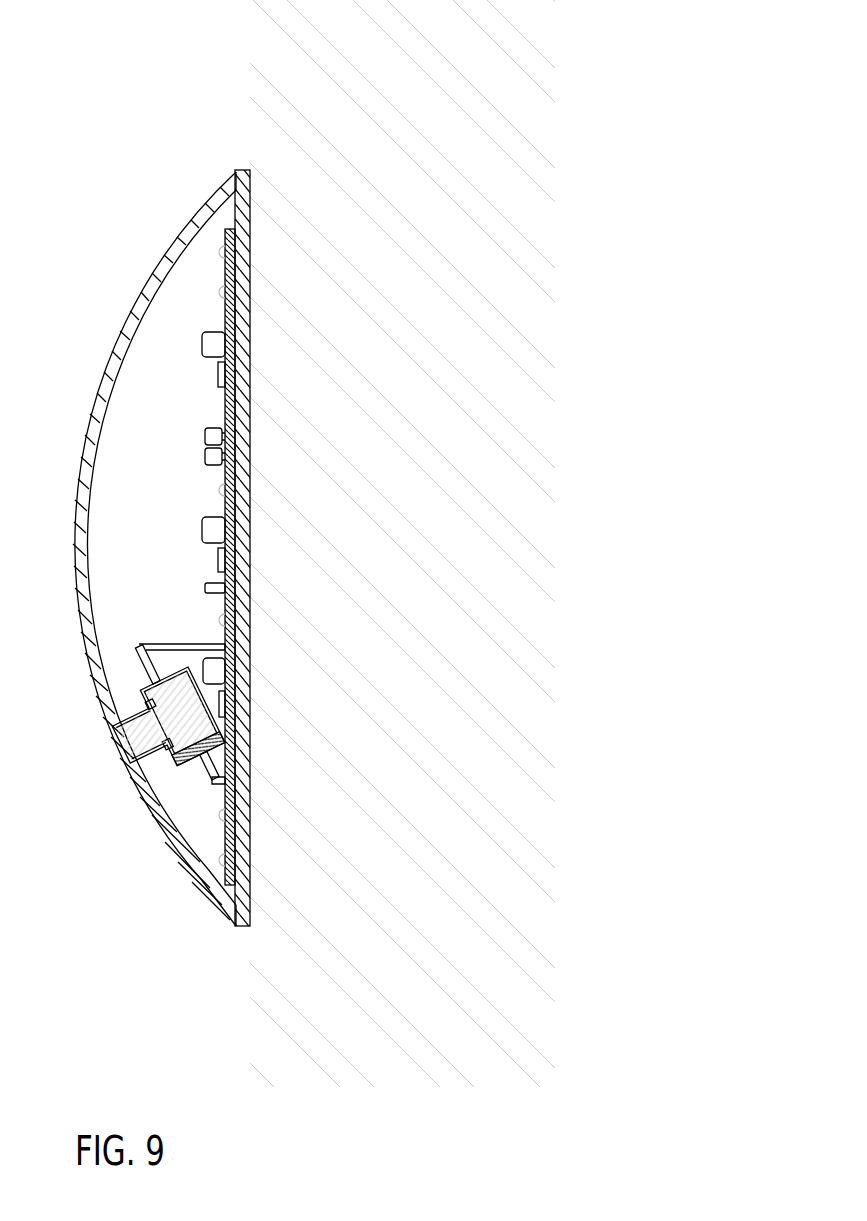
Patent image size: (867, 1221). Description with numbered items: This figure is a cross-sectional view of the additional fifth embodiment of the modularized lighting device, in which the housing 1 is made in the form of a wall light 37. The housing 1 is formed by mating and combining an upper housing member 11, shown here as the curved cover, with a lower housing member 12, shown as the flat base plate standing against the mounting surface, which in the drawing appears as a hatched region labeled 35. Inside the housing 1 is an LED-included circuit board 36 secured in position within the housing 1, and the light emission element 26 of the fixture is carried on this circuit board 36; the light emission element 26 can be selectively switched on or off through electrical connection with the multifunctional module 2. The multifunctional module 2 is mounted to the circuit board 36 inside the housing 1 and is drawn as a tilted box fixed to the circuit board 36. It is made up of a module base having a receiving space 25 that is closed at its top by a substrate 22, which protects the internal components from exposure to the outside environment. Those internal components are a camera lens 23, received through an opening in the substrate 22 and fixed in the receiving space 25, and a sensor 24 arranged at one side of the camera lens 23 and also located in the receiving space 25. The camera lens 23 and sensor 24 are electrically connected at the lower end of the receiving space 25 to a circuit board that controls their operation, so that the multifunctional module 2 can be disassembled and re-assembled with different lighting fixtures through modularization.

The housing 1 is at (208, 184).
The multifunctional module 2 is at (156, 722).
The upper housing member 11 is at (178, 863).
The lower housing member 12 is at (245, 168).
The substrate 22 is at (138, 702).
The camera lens 23 is at (118, 738).
The sensor 24 is at (187, 755).
The receiving space 25 is at (141, 688).
The light emission element 26 is at (218, 493).
The wall 35 is at (253, 66).
The circuit board 36 is at (223, 420).
The wall light 37 is at (168, 225).